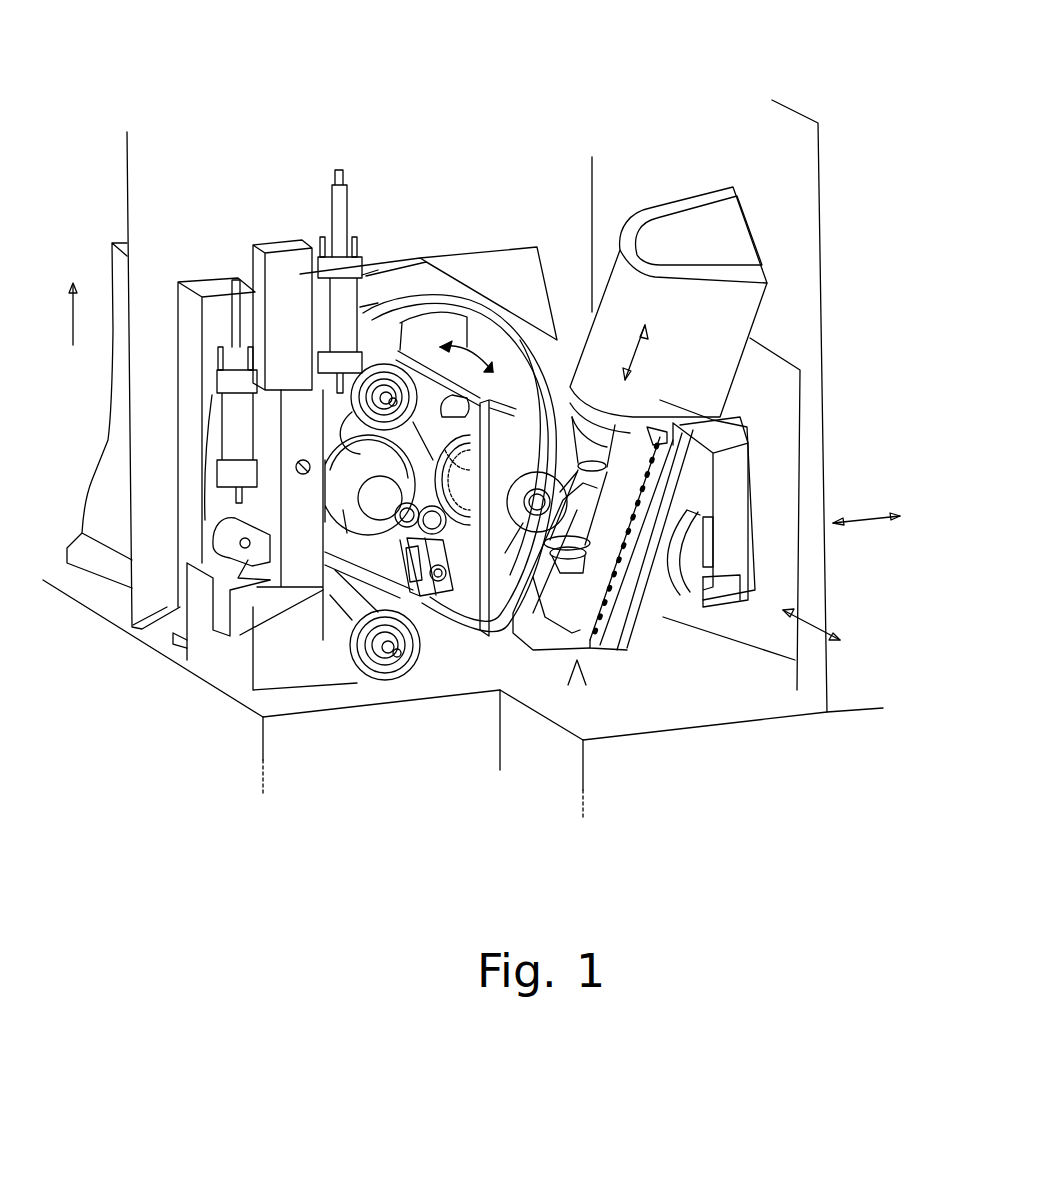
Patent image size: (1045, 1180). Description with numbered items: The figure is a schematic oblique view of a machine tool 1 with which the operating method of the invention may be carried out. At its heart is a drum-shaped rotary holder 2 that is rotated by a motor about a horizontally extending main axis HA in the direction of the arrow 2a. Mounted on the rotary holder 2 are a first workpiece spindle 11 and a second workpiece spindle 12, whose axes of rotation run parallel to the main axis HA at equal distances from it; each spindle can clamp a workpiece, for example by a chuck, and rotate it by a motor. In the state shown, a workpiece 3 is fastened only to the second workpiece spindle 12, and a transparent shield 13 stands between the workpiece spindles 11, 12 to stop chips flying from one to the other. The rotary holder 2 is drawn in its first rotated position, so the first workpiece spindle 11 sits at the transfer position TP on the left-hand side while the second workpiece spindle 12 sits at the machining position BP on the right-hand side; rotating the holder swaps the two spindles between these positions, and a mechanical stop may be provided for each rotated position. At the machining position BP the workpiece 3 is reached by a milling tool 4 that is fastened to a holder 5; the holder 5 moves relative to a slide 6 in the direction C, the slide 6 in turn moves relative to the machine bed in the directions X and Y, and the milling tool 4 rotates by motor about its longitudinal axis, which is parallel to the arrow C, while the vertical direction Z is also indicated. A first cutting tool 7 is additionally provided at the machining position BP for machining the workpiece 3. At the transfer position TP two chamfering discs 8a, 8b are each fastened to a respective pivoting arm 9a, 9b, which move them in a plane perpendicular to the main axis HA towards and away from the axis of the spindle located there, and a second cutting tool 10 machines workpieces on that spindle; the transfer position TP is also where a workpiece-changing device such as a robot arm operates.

The machine tool 1 is at (517, 166).
The rotary holder 2 is at (400, 272).
The arrow 2a is at (463, 305).
The workpiece 3 is at (548, 565).
The milling tool 4 is at (577, 507).
The holder 5 is at (660, 486).
The slide 6 is at (627, 490).
The first cutting tool 7 is at (499, 400).
The chamfering disc 8a is at (333, 390).
The chamfering disc 8b is at (390, 672).
The pivoting arm 9a is at (327, 420).
The pivoting arm 9b is at (127, 632).
The second cutting tool 10 is at (440, 610).
The first workpiece spindle 11 is at (263, 613).
The second workpiece spindle 12 is at (567, 430).
The transparent shield 13 is at (472, 640).
The transfer position TP is at (355, 557).
The main axis HA is at (468, 530).
The machining position BP is at (585, 692).
The direction C is at (637, 350).
The direction x X is at (866, 509).
The direction y Y is at (819, 620).
The direction z Z is at (62, 314).